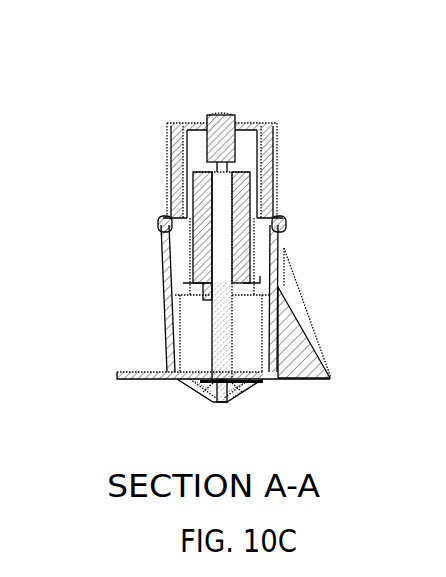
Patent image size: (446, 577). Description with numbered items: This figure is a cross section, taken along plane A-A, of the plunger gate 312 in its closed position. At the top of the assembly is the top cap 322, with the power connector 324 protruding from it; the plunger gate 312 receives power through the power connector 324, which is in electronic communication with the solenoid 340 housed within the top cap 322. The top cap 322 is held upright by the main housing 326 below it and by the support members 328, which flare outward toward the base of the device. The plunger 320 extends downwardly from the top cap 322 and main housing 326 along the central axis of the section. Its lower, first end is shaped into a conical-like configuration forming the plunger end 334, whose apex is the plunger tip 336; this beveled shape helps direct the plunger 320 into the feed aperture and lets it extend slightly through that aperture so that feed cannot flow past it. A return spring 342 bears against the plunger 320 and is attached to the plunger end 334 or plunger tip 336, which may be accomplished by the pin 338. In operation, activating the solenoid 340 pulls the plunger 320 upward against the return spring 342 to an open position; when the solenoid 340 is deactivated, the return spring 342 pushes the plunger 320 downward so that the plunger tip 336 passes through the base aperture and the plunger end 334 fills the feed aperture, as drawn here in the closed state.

The plunger gate 312 is at (166, 103).
The plunger 320 is at (168, 323).
The top cap 322 is at (170, 192).
The power connector 324 is at (240, 118).
The main housing 326 is at (285, 240).
The support members 328 is at (307, 327).
The plunger end 334 is at (238, 390).
The plunger tip 336 is at (213, 397).
The pin 338 is at (263, 383).
The solenoid 340 is at (245, 197).
The return spring 342 is at (210, 352).